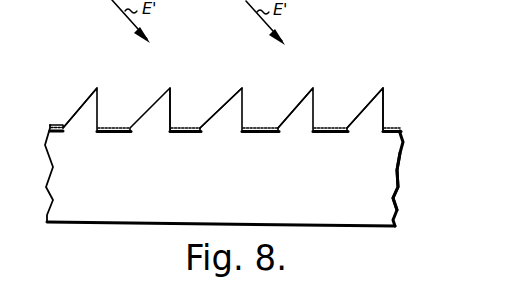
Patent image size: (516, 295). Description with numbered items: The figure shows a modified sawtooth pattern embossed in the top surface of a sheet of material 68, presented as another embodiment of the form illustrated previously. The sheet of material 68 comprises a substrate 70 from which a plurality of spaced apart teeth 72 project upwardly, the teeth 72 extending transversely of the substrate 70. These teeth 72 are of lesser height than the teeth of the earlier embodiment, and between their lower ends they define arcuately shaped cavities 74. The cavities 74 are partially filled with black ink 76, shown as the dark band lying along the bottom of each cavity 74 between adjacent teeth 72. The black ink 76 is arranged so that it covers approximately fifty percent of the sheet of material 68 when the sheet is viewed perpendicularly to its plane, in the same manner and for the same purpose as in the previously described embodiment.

The sheet of material 68 is at (410, 139).
The substrate 70 is at (375, 202).
The teeth 72 is at (86, 118).
The cavities 74 is at (180, 118).
The black ink 76 is at (116, 127).